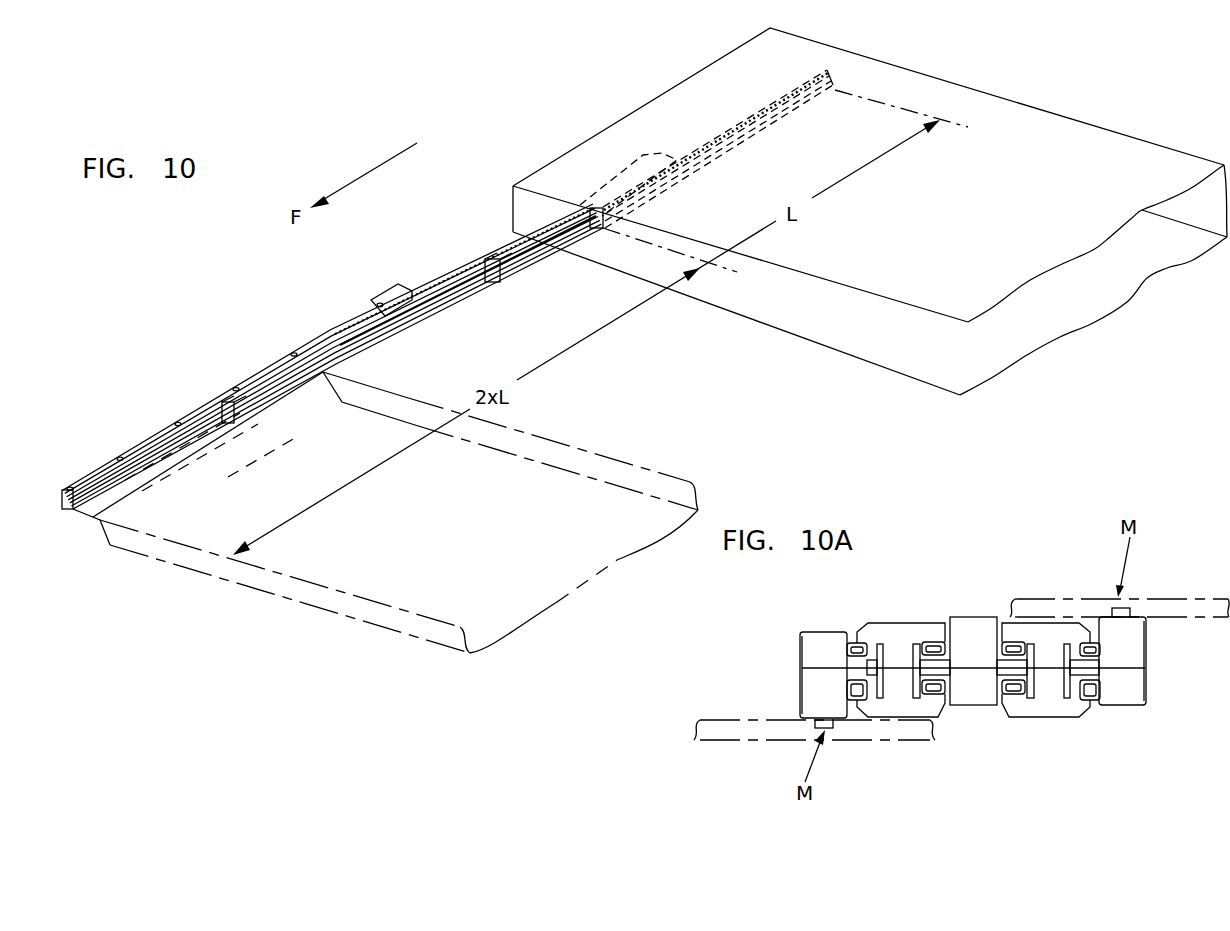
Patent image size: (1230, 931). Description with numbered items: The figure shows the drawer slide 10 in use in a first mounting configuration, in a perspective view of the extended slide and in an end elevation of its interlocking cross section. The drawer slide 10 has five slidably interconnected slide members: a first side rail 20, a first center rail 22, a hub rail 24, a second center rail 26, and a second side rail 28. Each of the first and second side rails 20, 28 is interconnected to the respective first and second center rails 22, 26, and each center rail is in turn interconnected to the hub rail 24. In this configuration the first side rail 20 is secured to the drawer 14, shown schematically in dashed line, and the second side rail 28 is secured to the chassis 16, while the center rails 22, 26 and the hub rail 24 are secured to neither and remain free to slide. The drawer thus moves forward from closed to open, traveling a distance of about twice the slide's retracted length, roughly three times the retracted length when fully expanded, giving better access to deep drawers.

In FIG. 10, the drawer slide 10 is at (144, 428).
In FIG. 10A, the drawer slide 10 is at (1147, 726).
In FIG. 10, the drawer 14 is at (282, 605).
In FIG. 10A, the drawer 14 is at (722, 720).
In FIG. 10, the chassis 16 is at (631, 99).
In FIG. 10A, the chassis 16 is at (1190, 597).
In FIG. 10, the first side rail 20 is at (145, 460).
In FIG. 10A, the first side rail 20 is at (802, 647).
In FIG. 10, the first center rail 22 is at (273, 392).
In FIG. 10A, the first center rail 22 is at (873, 622).
In FIG. 10, the hub rail 24 is at (447, 273).
In FIG. 10A, the hub rail 24 is at (980, 706).
In FIG. 10, the second center rail 26 is at (507, 278).
In FIG. 10A, the second center rail 26 is at (1062, 717).
In FIG. 10, the second side rail 28 is at (602, 228).
In FIG. 10A, the second side rail 28 is at (1146, 655).